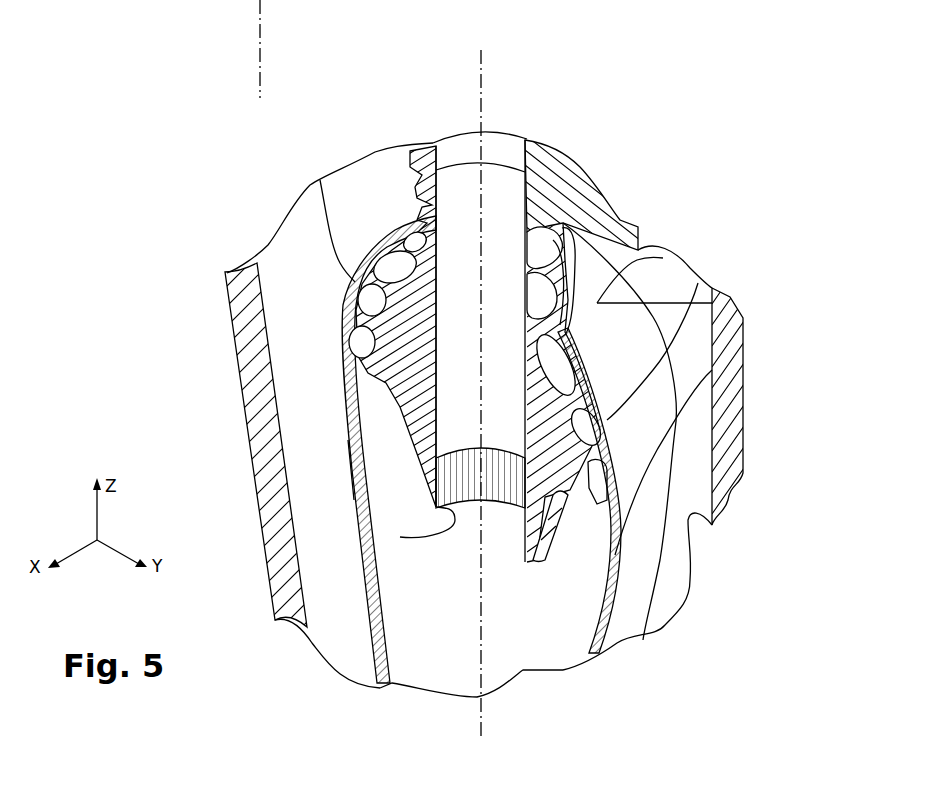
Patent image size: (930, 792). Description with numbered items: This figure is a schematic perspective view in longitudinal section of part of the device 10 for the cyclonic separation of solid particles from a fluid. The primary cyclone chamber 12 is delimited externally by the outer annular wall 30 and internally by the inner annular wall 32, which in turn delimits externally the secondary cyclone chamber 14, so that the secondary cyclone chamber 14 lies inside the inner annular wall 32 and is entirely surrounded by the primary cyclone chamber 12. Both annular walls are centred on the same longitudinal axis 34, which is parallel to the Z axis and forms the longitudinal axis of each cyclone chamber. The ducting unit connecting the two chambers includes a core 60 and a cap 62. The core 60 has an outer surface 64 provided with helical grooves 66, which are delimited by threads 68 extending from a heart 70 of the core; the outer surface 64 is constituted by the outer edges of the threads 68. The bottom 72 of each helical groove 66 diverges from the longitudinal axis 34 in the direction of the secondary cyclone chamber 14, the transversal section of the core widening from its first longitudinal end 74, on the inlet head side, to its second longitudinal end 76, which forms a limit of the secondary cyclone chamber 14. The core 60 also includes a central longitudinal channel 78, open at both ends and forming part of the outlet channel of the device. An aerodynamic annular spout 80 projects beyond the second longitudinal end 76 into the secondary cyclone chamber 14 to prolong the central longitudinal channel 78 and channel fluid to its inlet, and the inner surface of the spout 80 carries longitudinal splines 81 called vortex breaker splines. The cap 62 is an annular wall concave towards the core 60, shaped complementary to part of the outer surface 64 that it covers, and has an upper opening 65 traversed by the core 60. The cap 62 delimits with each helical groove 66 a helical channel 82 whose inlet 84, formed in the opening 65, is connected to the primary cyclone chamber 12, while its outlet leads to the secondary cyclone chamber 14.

The device 10 is at (636, 124).
The primary cyclone chamber 12 is at (330, 583).
The secondary cyclone chamber 14 is at (427, 643).
The outer annular wall 30 is at (253, 313).
The inner annular wall 32 is at (347, 482).
The longitudinal axis 34 is at (483, 75).
The core 60 is at (393, 415).
The cap 62 is at (320, 181).
The outer surface 64 is at (557, 330).
The upper opening 65 is at (698, 283).
The helical grooves 66 is at (683, 511).
The threads 68 is at (713, 372).
The heart 70 is at (613, 552).
The bottom 72 is at (620, 485).
The first longitudinal end 74 is at (460, 168).
The second longitudinal end 76 is at (340, 403).
The central longitudinal channel 78 is at (497, 192).
The aerodynamic annular spout 80 is at (547, 543).
The longitudinal splines 81 is at (400, 537).
The helical channel 82 is at (730, 300).
The inlet 84 is at (663, 258).